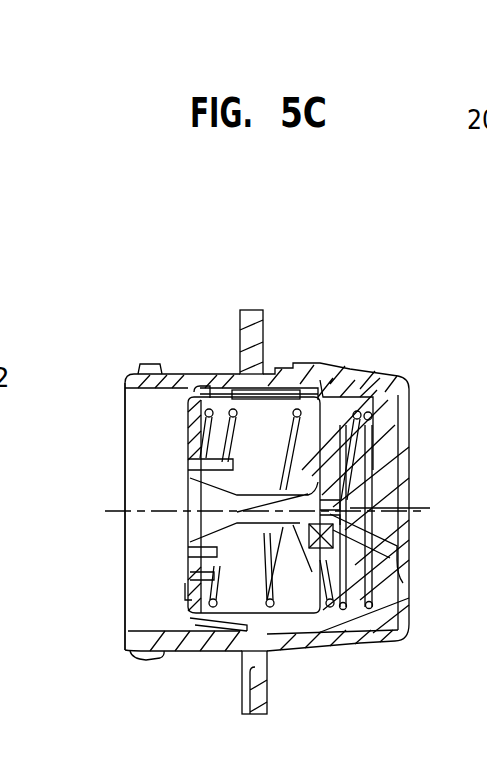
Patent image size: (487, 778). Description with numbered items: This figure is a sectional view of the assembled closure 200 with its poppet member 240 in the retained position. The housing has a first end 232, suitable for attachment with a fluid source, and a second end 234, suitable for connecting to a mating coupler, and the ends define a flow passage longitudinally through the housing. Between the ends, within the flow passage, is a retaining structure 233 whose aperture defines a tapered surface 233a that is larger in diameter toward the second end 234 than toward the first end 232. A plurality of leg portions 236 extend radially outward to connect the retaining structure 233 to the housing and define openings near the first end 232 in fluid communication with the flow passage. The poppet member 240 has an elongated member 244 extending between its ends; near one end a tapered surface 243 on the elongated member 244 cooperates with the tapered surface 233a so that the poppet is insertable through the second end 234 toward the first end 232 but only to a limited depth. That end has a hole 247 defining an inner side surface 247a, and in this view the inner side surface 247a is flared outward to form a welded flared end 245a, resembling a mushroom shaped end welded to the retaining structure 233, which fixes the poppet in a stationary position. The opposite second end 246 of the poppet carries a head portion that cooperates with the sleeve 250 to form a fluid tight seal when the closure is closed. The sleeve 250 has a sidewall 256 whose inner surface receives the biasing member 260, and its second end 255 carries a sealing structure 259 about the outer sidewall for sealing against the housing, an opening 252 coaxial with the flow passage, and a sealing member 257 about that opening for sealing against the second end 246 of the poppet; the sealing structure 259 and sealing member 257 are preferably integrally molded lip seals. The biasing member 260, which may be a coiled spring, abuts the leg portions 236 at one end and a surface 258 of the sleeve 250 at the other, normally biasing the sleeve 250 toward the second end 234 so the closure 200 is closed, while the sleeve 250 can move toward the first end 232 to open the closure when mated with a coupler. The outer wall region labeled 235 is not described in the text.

The closure 200 is at (165, 294).
The first end 232 is at (383, 382).
The retaining structure 233 is at (312, 492).
The tapered surface 233a is at (340, 521).
The second end 234 is at (128, 374).
The housing side wall 235 is at (125, 468).
The leg portions 236 is at (352, 440).
The poppet member 240 is at (257, 500).
The tapered surface 243 is at (345, 462).
The elongated member 244 is at (318, 575).
The welded flared end 245a is at (334, 531).
The second end 246 is at (192, 480).
The hole 247 is at (330, 504).
The inner side surface 247a is at (340, 486).
The sleeve 250 is at (181, 615).
The opening 252 is at (188, 551).
The second end 255 is at (193, 574).
The sidewall 256 is at (295, 390).
The sealing member 257 is at (200, 389).
The surface 258 is at (194, 609).
The sealing structure 259 is at (227, 390).
The biasing member 260 is at (372, 607).